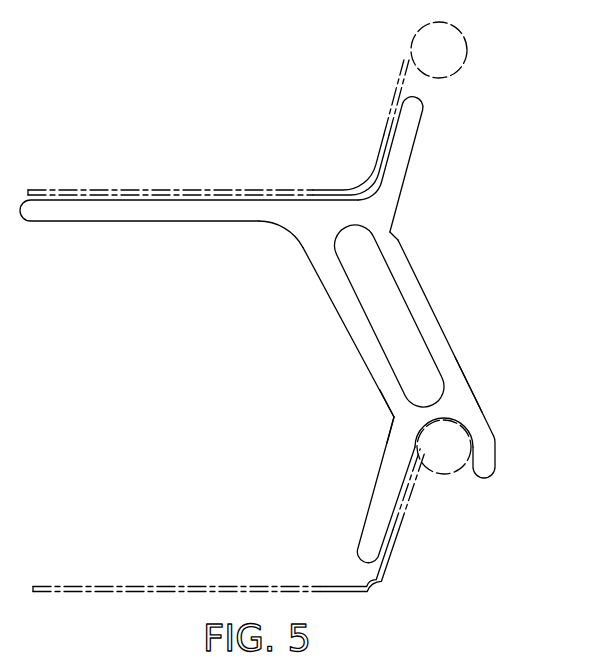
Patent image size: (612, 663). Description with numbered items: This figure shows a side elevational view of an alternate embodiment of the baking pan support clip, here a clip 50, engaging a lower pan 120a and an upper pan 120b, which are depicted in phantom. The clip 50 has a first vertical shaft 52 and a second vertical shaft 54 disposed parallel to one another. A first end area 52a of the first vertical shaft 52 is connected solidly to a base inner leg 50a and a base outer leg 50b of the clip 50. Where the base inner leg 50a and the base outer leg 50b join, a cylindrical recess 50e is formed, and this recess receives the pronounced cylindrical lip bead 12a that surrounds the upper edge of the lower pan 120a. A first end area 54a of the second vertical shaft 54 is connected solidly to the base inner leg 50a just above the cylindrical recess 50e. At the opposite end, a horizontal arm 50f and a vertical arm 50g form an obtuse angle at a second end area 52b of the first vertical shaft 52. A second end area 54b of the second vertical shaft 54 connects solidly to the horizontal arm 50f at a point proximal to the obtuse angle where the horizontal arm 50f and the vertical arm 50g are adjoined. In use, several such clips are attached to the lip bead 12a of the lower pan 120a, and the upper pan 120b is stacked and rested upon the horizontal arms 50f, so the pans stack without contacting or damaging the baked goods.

The clip 50 is at (304, 330).
The base inner leg 50a is at (372, 500).
The base outer leg 50b is at (494, 450).
The cylindrical recess 50e is at (447, 419).
The horizontal arm 50f is at (100, 222).
The vertical arm 50g is at (411, 156).
The first vertical shaft 52 is at (436, 318).
The first end area of first vertical shaft 52a is at (470, 387).
The second end area of first vertical shaft 52b is at (394, 234).
The second vertical shaft 54 is at (339, 312).
The first end area of second vertical shaft 54a is at (393, 417).
The second end area of second vertical shaft 54b is at (300, 240).
The lip bead 12a is at (467, 50).
The lower pan 120a is at (202, 585).
The upper pan 120b is at (203, 188).